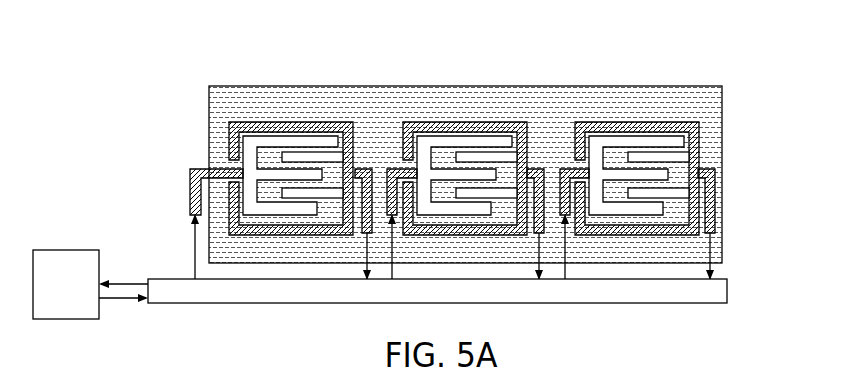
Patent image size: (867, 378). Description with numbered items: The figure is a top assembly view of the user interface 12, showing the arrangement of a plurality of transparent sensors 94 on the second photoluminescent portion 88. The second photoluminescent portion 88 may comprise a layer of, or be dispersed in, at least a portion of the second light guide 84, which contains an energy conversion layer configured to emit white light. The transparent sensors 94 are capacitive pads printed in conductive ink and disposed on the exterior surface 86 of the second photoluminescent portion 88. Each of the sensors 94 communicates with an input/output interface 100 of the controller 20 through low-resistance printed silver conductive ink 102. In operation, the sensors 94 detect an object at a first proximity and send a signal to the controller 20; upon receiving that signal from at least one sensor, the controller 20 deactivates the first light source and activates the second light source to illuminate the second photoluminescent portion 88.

The user interface 12 is at (737, 36).
The controller 20 is at (77, 294).
The second light guide 84 is at (459, 214).
The exterior surface 86 is at (253, 248).
The second photoluminescent portion 88 is at (715, 107).
The transparent sensors 94 is at (292, 142).
The input/output (I/O) interface 100 is at (726, 290).
The printed silver conductive ink 102 is at (250, 122).